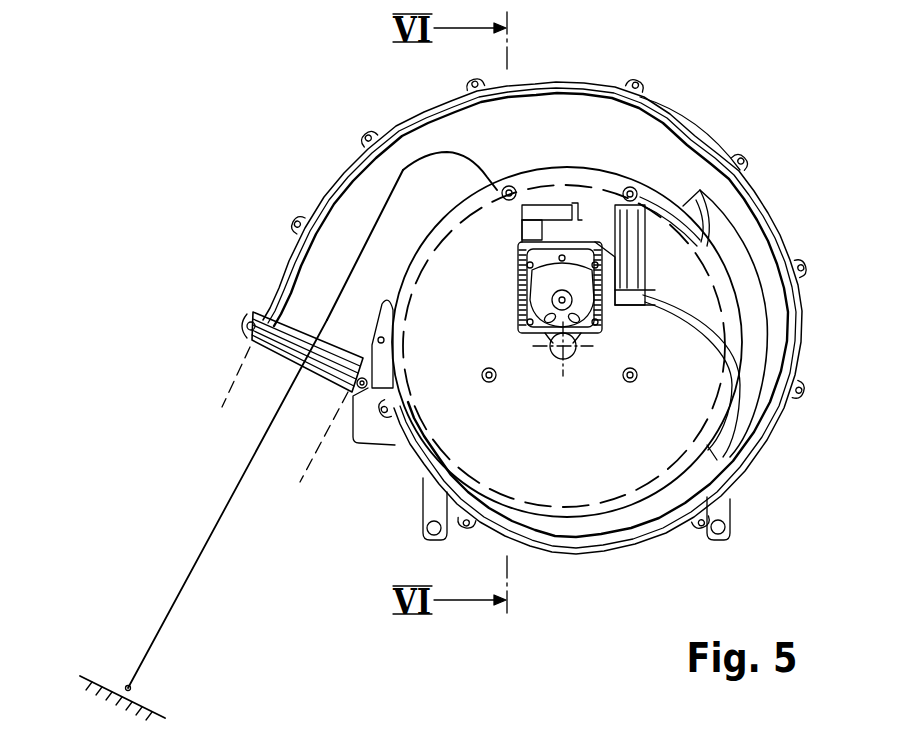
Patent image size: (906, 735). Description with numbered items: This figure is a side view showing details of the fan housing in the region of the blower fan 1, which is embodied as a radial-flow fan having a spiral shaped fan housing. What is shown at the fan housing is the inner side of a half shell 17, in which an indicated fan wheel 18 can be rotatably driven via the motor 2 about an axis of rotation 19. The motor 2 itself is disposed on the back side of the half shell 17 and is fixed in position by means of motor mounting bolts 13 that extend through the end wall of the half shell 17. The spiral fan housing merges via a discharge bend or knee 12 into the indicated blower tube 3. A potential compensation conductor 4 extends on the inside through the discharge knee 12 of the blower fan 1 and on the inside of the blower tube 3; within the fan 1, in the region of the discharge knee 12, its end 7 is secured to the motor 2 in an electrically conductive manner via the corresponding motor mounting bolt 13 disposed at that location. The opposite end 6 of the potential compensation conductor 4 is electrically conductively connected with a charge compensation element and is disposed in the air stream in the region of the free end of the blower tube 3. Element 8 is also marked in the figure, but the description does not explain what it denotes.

The blower fan 1 is at (250, 222).
The motor 2 is at (512, 275).
The blower tube 3 is at (242, 374).
The potential compensation conductor 4 is at (208, 540).
The end of the potential compensation conductor 6 is at (142, 688).
The end of the potential compensation conductor 7 is at (486, 158).
The base 8 is at (98, 680).
The discharge bend or knee 12 is at (370, 185).
The motor mounting bolt 13 is at (512, 188).
The half shell 17 is at (672, 112).
The fan wheel 18 is at (723, 306).
The axis of rotation 19 is at (560, 372).